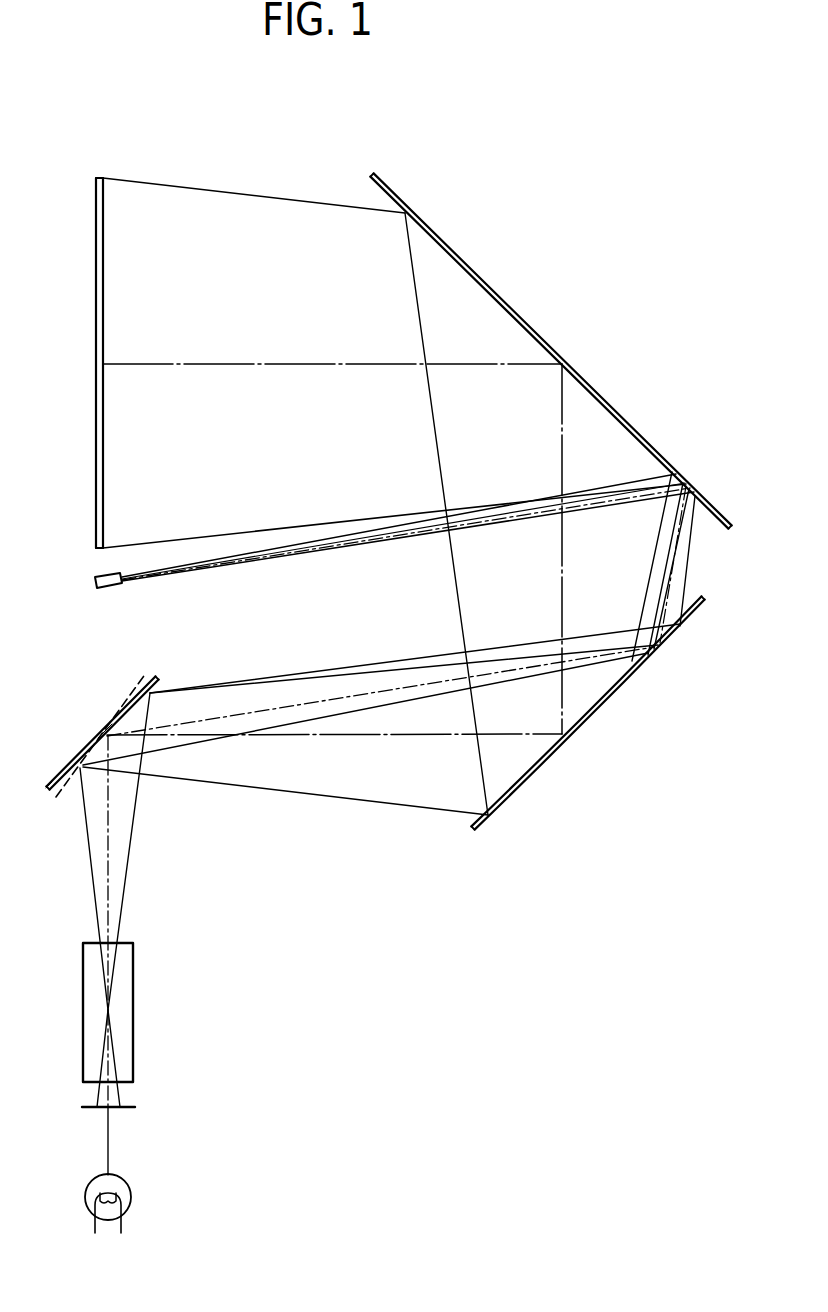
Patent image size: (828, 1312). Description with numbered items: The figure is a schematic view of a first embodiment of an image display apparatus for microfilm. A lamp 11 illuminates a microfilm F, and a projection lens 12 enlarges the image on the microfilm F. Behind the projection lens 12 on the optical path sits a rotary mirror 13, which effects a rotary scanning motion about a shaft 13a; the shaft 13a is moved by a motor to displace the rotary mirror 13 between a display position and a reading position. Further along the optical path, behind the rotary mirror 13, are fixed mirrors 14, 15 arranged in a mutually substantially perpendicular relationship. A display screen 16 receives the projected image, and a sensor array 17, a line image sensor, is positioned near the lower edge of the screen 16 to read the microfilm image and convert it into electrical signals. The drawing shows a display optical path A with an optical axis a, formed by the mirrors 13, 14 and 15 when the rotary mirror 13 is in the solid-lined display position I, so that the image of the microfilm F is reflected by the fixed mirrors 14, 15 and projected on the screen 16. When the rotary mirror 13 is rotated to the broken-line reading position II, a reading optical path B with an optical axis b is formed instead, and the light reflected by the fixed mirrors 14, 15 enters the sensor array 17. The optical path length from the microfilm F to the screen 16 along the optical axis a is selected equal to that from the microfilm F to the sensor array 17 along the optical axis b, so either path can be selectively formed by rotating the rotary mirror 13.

The lamp 11 is at (131, 1186).
The projection lens 12 is at (134, 1022).
The rotary mirror 13 is at (80, 774).
The shaft 13a is at (105, 731).
The fixed mirror 14 is at (522, 784).
The fixed mirror 15 is at (547, 346).
The display screen 16 is at (101, 178).
The sensor array 17 is at (108, 588).
The display optical path A is at (277, 197).
The optical axis a is at (263, 363).
The reading optical path B is at (353, 547).
The optical axis b is at (400, 540).
The microfilm F is at (128, 1104).
The display position I is at (39, 791).
The reading position II is at (99, 754).